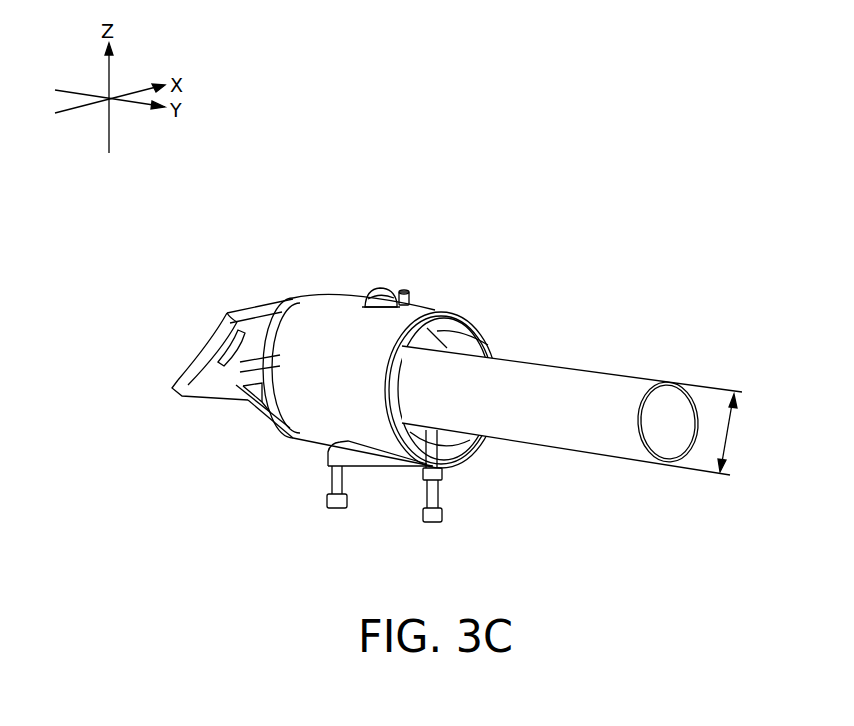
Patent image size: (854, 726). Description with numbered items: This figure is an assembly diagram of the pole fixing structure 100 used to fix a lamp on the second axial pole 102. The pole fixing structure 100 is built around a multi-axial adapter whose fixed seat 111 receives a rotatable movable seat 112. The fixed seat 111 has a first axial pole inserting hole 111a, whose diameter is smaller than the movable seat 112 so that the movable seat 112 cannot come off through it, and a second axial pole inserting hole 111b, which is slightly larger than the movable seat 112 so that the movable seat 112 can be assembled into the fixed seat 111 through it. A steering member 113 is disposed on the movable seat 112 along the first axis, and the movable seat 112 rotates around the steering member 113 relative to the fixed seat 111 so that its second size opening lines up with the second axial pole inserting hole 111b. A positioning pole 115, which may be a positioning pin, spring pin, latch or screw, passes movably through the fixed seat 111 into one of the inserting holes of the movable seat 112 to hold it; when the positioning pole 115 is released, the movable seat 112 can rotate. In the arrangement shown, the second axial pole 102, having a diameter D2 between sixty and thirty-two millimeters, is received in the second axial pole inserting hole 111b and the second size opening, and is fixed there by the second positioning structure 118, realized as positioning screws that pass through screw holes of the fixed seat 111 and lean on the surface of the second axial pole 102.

The pole fixing structure 100 is at (167, 232).
The second axial pole 102 is at (613, 397).
The fixed seat 111 is at (336, 303).
The first axial pole inserting hole 111a is at (385, 478).
The second axial pole inserting hole 111b is at (458, 442).
The movable seat 112 is at (490, 344).
The steering member 113 is at (388, 289).
The positioning pole 115 is at (410, 300).
The second positioning structure 118 is at (433, 502).
The diameter of the second axial pole D2 is at (738, 433).